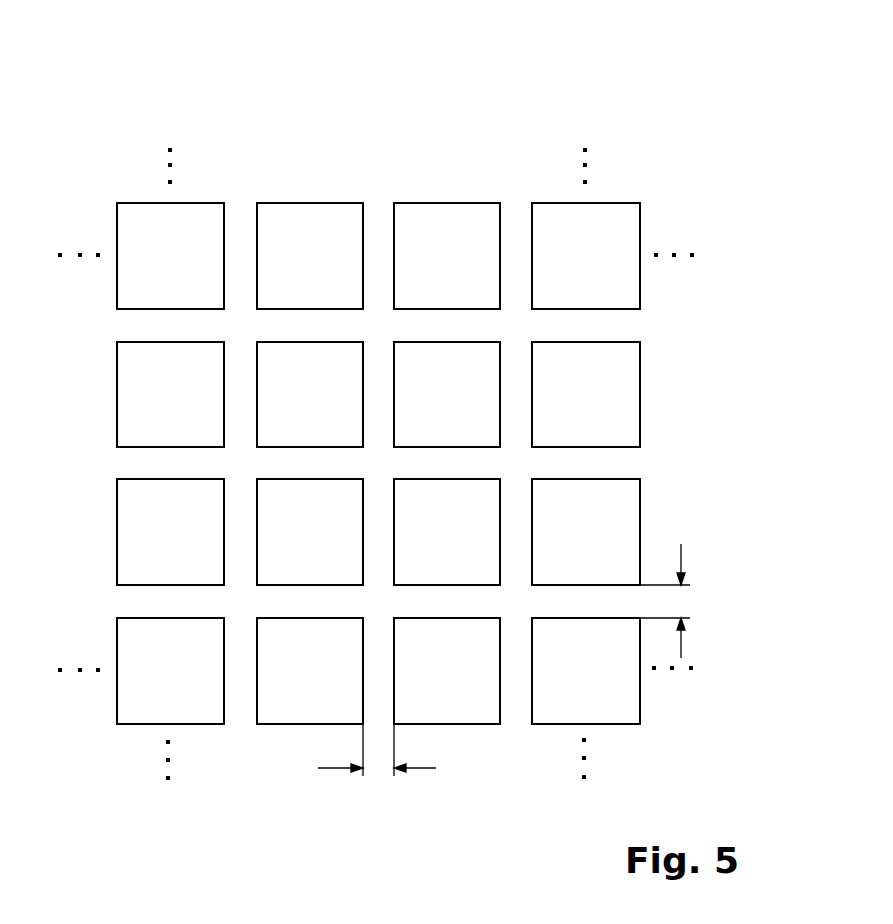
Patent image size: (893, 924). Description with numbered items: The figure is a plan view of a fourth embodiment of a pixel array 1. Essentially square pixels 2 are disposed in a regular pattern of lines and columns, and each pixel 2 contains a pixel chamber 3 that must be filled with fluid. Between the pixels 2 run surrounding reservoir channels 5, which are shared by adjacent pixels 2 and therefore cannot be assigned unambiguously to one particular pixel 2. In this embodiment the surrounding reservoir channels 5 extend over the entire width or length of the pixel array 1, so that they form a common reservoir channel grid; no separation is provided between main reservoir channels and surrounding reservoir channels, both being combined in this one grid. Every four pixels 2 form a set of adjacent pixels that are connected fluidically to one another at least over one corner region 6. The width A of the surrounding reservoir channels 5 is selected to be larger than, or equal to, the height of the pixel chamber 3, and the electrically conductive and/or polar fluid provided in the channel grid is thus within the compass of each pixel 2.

The pixel array 1 is at (520, 90).
The pixel 2 is at (147, 203).
The pixel chamber 3 is at (197, 227).
The surrounding reservoir channel 5 is at (241, 210).
The corner region 6 is at (268, 326).
The width of the surrounding reservoir channels A is at (331, 771).